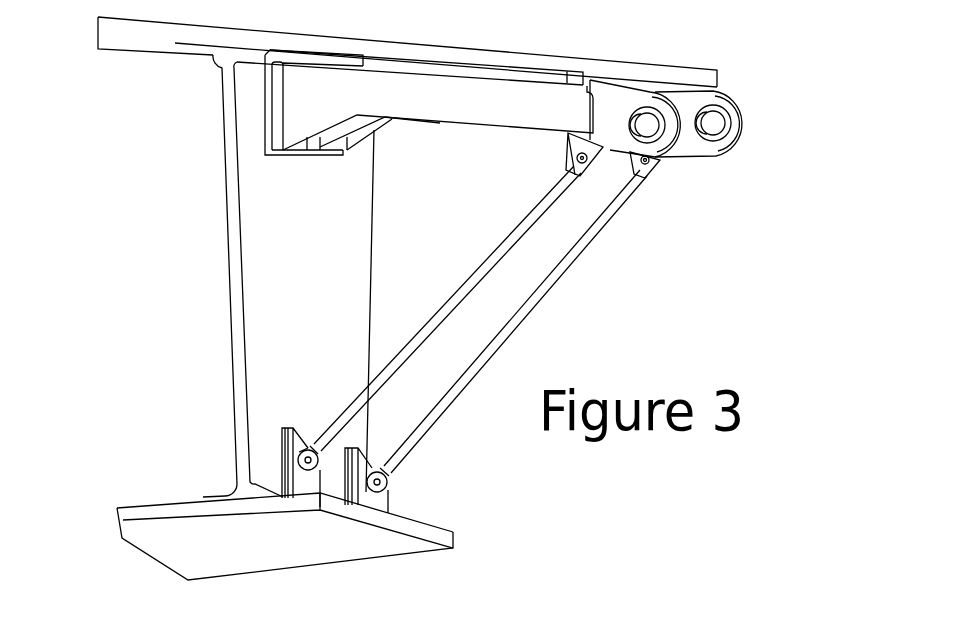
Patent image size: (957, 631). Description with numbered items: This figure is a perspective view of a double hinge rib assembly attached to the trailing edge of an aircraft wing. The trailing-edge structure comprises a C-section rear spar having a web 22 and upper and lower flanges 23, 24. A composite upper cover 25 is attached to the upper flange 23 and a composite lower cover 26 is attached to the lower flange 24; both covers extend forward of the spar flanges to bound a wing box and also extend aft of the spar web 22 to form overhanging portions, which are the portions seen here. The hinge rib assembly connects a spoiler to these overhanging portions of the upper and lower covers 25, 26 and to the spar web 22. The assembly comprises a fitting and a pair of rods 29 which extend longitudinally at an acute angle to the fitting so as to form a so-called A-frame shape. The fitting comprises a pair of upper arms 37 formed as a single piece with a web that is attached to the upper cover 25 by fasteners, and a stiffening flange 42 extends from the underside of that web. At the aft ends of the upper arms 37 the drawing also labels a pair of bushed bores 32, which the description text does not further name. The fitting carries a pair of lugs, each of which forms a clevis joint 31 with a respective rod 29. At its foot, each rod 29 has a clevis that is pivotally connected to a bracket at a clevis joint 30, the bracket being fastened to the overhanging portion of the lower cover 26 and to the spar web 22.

The web 22 is at (240, 246).
The upper flange 23 is at (157, 45).
The lower flange 24 is at (176, 501).
The upper cover 25 is at (125, 25).
The lower cover 26 is at (430, 532).
The rods 29 is at (507, 328).
The clevis joint 30 is at (310, 458).
The clevis joint 31 is at (650, 166).
The bushings 32 is at (718, 124).
The upper arms 37 is at (432, 102).
The stiffening flange 42 is at (298, 152).